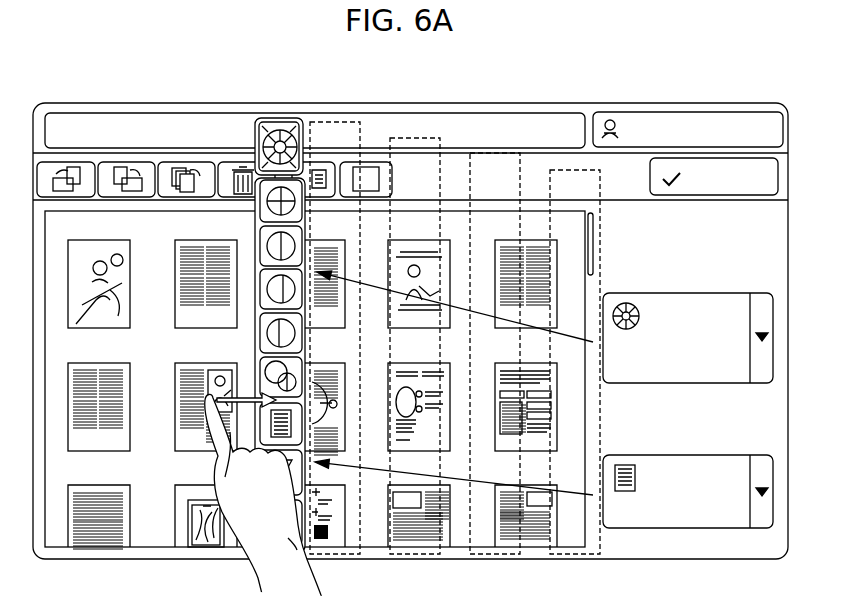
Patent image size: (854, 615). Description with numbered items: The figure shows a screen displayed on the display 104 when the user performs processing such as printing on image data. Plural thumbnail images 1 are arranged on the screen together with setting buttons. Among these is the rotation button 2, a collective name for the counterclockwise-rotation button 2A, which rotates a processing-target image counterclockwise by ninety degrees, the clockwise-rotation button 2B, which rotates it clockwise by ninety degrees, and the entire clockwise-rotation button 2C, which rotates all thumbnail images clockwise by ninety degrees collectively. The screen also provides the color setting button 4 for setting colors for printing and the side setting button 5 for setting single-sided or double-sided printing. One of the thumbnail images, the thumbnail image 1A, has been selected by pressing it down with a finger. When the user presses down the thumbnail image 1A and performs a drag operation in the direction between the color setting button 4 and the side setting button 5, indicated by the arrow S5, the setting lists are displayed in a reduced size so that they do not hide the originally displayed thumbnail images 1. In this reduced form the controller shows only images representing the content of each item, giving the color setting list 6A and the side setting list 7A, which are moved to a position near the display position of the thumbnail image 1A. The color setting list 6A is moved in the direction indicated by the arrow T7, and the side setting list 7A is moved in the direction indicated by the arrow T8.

The display 104 is at (531, 84).
The rotation button 2 is at (128, 114).
The counterclockwise-rotation button 2A is at (88, 163).
The clockwise-rotation button 2B is at (148, 163).
The entire clockwise-rotation button 2C is at (186, 133).
The color setting list 6A is at (293, 130).
The side setting list 7A is at (276, 498).
The thumbnail images 1 is at (345, 265).
The thumbnail image 1A is at (183, 448).
The arrow S5 is at (248, 398).
The arrow T7 is at (455, 307).
The arrow T8 is at (454, 474).
The color setting button 4 is at (740, 325).
The side setting button 5 is at (740, 503).